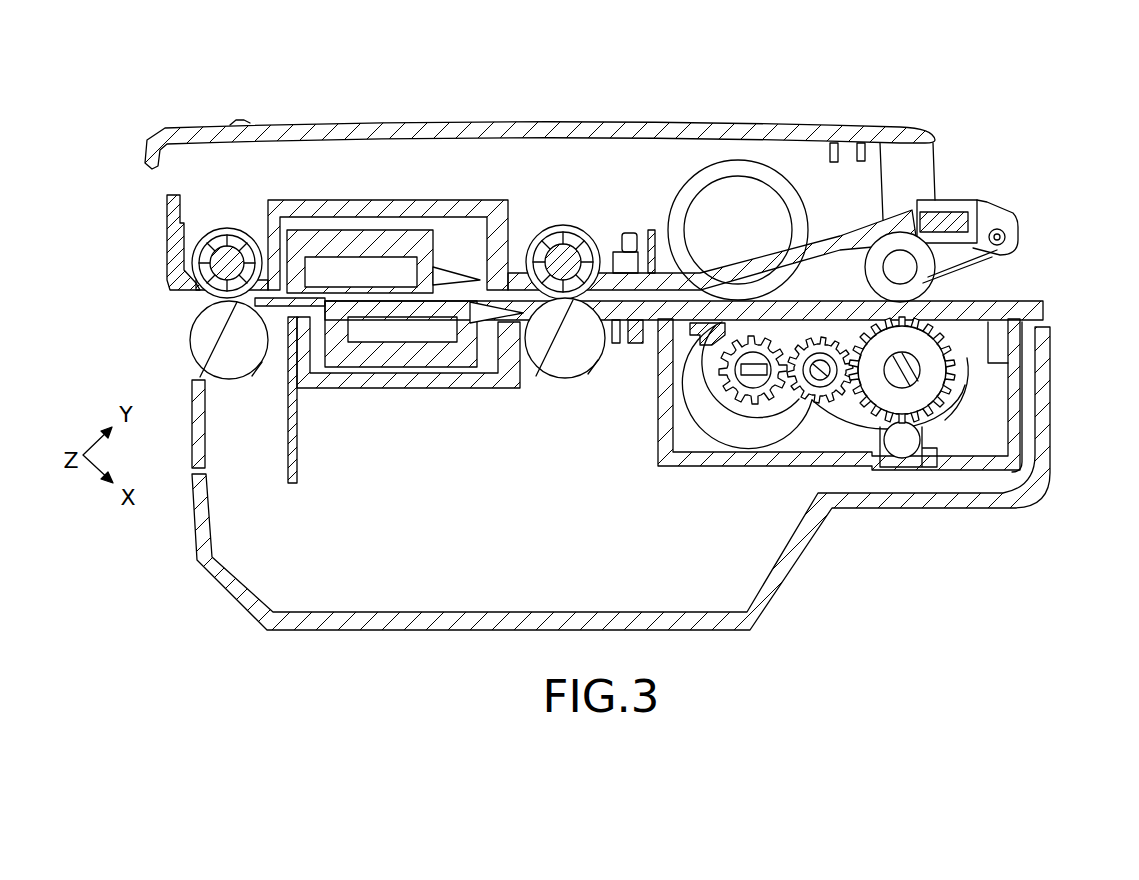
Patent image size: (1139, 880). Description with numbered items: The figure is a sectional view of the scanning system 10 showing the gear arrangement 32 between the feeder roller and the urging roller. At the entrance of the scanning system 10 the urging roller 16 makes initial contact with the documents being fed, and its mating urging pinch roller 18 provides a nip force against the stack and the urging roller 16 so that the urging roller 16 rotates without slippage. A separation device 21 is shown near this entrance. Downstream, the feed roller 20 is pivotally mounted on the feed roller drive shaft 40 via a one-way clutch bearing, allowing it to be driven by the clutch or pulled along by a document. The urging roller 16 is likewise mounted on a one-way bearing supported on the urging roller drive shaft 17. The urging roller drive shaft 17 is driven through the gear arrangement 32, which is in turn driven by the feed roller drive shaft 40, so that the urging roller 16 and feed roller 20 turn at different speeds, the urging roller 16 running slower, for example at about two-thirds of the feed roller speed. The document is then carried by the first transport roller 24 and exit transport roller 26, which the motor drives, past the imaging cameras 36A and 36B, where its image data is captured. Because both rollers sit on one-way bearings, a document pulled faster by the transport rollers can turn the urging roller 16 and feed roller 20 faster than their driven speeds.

The scanning system 10 is at (201, 641).
The urging roller 16 is at (937, 303).
The urging roller drive shaft 17 is at (943, 380).
The urging pinch roller 18 is at (936, 203).
The feed roller 20 is at (712, 425).
The separation device 21 is at (787, 172).
The first transport roller 24 is at (553, 378).
The exit transport roller 26 is at (252, 377).
The gear arrangement 32 is at (837, 420).
The camera 36A is at (403, 332).
The camera 36B is at (383, 268).
The feed roller drive shaft 40 is at (752, 380).